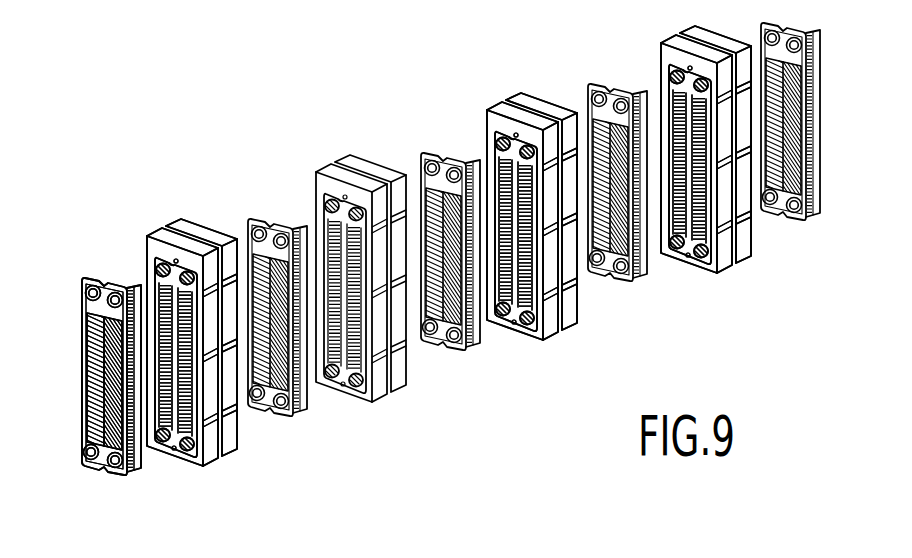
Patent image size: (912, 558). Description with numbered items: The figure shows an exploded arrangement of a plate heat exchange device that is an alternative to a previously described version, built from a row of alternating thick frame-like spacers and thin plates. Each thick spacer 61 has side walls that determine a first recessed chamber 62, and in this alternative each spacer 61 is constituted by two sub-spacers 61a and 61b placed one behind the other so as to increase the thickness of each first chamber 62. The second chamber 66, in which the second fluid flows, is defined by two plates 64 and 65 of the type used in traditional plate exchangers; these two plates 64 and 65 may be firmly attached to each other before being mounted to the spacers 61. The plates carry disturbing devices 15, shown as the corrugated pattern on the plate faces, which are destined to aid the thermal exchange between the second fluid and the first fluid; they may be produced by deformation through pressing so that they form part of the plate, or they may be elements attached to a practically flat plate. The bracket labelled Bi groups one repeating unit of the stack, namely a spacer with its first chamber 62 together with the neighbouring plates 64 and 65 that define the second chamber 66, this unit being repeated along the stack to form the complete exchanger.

The disturbing devices 15 is at (94, 379).
The spacer 61 is at (230, 167).
The sub-spacer 61a is at (157, 238).
The sub-spacer 61b is at (200, 233).
The first recessed chamber 62 is at (317, 222).
The plate 64 is at (110, 470).
The plate 65 is at (143, 463).
The second chamber 66 is at (310, 397).
The plate stack unit Bi is at (483, 430).